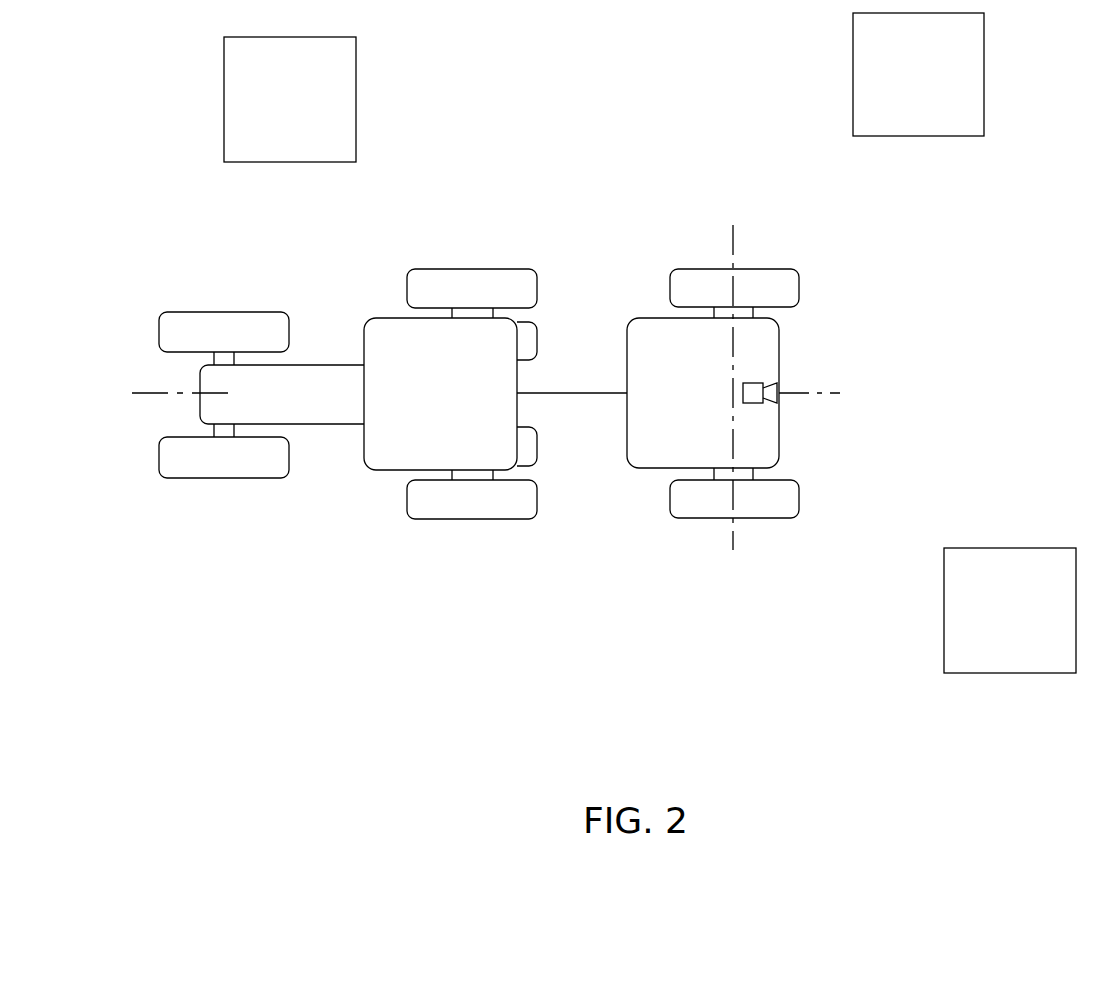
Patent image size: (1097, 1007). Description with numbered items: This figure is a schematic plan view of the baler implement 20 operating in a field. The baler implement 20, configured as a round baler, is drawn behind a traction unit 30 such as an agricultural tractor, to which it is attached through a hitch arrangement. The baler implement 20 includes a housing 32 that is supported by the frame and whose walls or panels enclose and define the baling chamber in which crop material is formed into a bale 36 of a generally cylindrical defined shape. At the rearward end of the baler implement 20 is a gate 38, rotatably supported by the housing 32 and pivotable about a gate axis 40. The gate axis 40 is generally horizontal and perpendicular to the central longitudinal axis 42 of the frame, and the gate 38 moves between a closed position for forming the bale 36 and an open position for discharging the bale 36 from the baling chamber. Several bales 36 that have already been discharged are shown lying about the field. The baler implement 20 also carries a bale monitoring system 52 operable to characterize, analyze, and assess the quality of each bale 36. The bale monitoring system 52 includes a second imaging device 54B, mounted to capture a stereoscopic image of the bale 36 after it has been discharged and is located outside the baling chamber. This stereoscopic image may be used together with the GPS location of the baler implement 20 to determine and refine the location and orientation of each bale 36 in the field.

The baler implement 20 is at (786, 371).
The traction unit 30 is at (305, 365).
The housing 32 is at (657, 327).
The bale 36 is at (224, 141).
The gate 38 is at (779, 345).
The gate axis 40 is at (733, 240).
The central longitudinal axis 42 is at (140, 393).
The bale monitoring system 52 is at (761, 428).
The second imaging device 54B is at (765, 383).